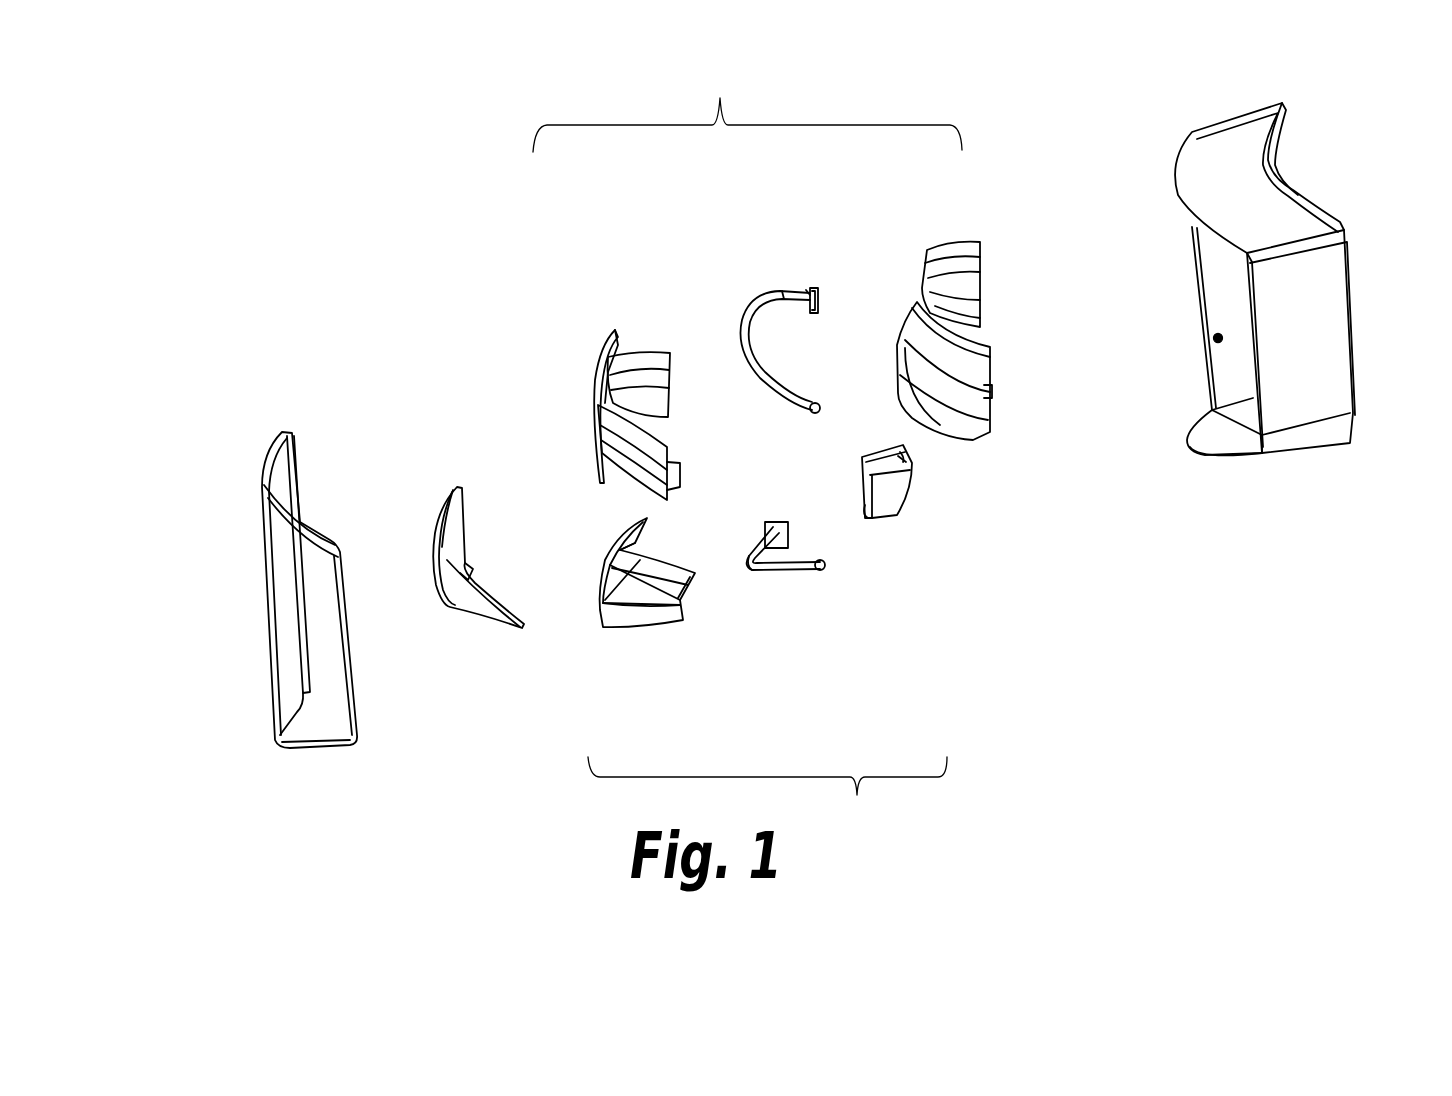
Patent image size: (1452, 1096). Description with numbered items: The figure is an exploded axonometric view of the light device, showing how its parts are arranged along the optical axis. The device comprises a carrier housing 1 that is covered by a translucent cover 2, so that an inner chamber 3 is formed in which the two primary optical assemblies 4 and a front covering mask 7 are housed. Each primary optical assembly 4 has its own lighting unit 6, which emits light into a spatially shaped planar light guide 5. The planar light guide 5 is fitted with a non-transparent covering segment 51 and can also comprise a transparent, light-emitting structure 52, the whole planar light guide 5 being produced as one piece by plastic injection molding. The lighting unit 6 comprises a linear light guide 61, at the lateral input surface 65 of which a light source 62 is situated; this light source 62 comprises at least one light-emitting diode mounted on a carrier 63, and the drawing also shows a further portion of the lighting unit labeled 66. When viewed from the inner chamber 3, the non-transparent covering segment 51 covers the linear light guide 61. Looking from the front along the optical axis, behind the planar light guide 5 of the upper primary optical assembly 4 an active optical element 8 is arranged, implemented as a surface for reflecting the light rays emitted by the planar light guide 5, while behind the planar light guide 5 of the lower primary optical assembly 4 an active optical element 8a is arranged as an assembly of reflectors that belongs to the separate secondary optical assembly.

The carrier housing 1 is at (1295, 188).
The translucent cover 2 is at (258, 667).
The inner chamber 3 is at (1222, 338).
The primary optical assembly 4 is at (747, 449).
The planar light guide 5 is at (468, 516).
The non-transparent covering segment 51 is at (605, 430).
The transparent, light-emitting structure 52 is at (603, 477).
The lighting unit 6 is at (730, 340).
The linear light guide 61 is at (815, 400).
The light source 62 is at (921, 466).
The carrier 63 is at (790, 532).
The lateral input surface 65 is at (820, 287).
The clip arm 66 is at (772, 400).
The front covering mask 7 is at (448, 615).
The active optical element 8 is at (980, 258).
The active optical element 8a is at (900, 508).